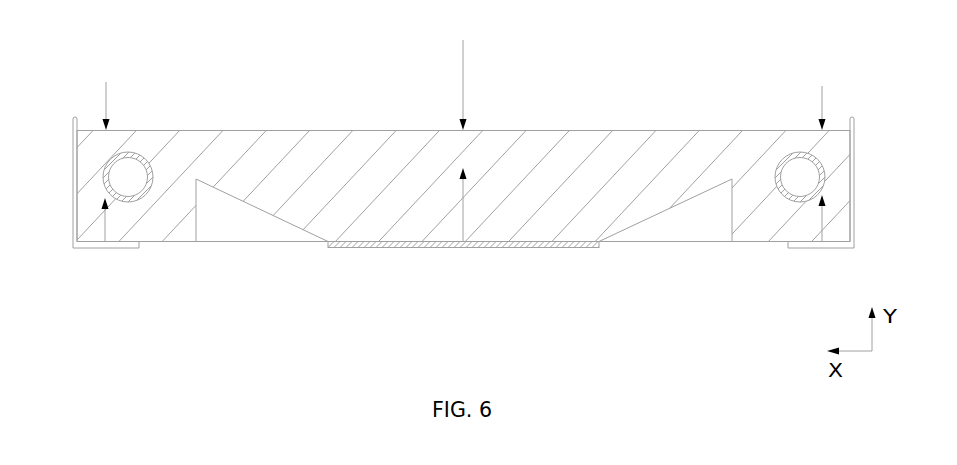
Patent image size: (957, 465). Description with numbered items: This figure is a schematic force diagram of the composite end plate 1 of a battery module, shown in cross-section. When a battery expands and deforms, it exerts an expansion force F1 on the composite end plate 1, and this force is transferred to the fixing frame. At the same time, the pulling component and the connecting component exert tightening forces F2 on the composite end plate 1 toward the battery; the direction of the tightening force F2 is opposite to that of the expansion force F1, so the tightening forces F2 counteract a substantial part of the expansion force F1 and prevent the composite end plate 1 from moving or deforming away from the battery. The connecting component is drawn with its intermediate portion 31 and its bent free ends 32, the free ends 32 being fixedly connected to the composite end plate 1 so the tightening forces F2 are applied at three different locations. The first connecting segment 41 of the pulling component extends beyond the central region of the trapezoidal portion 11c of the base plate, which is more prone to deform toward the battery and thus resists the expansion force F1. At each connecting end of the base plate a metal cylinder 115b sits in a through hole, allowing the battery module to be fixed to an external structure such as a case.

The composite end plate 1 is at (660, 198).
The trapezoidal portion 11c is at (265, 242).
The cylinder 115b is at (140, 155).
The intermediate portion 31 is at (73, 185).
The free end 32 is at (122, 248).
The first connecting segment 41 is at (395, 248).
The expansion force F1 is at (465, 72).
The tightening force F2 is at (464, 204).